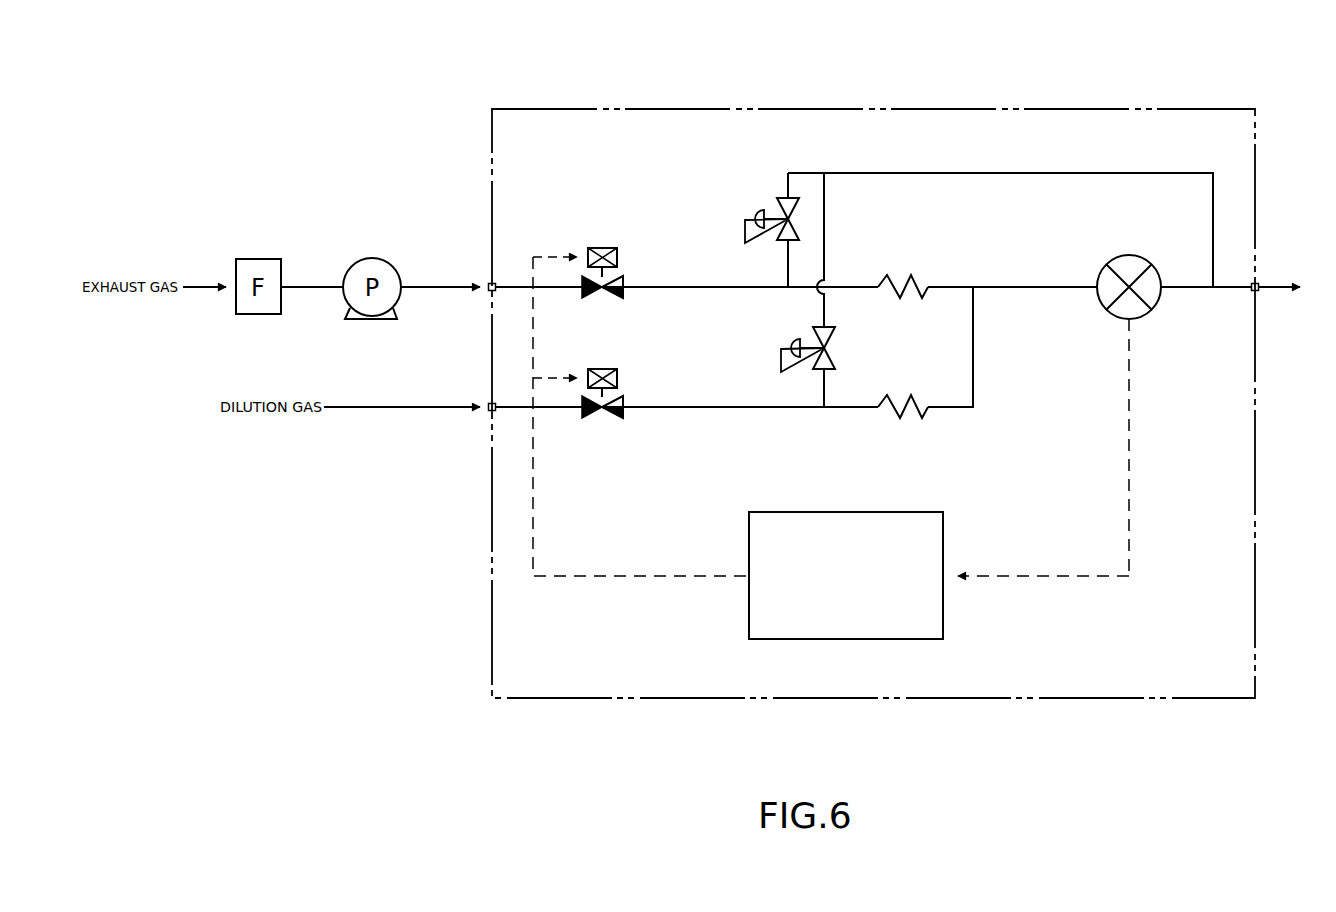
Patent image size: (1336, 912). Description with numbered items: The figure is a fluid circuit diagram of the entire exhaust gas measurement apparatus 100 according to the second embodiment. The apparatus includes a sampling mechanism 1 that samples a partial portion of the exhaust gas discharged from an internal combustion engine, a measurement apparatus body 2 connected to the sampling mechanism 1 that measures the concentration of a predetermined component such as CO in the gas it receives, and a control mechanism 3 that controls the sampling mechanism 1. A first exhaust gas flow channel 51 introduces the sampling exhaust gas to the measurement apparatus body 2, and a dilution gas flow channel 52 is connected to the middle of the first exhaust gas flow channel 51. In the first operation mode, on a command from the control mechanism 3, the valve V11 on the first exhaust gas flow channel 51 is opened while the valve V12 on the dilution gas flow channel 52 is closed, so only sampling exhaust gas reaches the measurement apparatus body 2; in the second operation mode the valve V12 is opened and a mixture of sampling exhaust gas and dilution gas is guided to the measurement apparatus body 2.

The exhaust gas measurement apparatus 100 is at (950, 101).
The sampling mechanism 1 is at (722, 199).
The measurement apparatus body 2 is at (1160, 302).
The control mechanism 3 is at (838, 512).
The first exhaust gas flow channel 51 is at (717, 288).
The dilution gas flow channel 52 is at (673, 408).
The valve V11 is at (618, 257).
The valve V12 is at (595, 369).